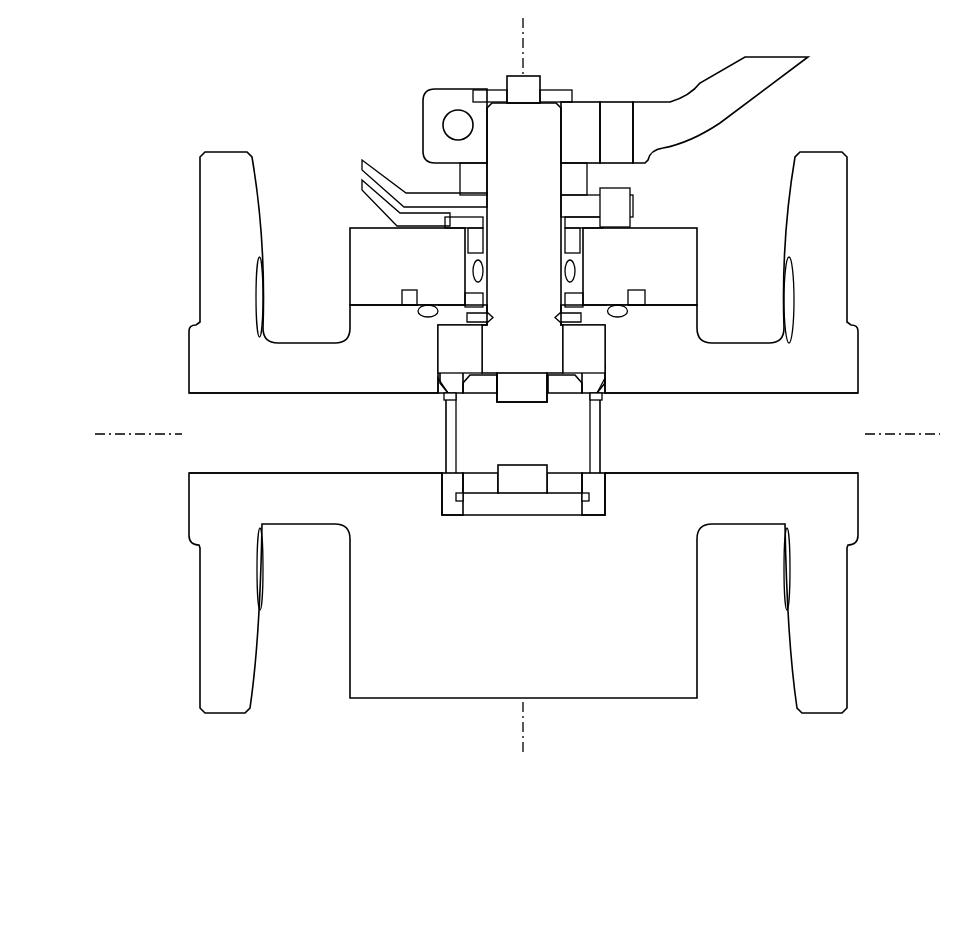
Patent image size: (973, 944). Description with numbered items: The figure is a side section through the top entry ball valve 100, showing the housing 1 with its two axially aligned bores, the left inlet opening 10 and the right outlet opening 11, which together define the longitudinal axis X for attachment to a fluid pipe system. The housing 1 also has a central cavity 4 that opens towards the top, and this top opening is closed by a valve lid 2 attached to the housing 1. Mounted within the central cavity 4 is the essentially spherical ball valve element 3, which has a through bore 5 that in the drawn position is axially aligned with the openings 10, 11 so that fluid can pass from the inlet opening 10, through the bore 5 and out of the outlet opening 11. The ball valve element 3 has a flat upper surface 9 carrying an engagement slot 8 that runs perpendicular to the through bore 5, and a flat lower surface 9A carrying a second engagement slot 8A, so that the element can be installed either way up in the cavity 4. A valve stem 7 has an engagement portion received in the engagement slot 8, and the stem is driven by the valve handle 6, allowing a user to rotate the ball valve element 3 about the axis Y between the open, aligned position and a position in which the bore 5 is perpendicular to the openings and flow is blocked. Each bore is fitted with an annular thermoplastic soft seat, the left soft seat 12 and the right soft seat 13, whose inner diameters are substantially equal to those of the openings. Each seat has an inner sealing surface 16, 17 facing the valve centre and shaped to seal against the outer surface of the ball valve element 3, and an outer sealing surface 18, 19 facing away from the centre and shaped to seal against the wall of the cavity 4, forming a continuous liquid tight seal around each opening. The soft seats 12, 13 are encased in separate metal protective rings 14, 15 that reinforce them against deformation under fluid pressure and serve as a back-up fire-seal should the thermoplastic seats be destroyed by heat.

The top entry ball valve 100 is at (889, 138).
The housing 1 is at (683, 320).
The valve lid 2 is at (373, 247).
The ball valve element 3 is at (565, 485).
The central cavity 4 is at (458, 340).
The through bore 5 is at (480, 452).
The valve handle 6 is at (700, 97).
The valve stem 7 is at (549, 137).
The engagement slot 8 is at (552, 387).
The second engagement slot 8A is at (498, 483).
The flat upper surface 9 is at (477, 375).
The flat lower surface 9A is at (485, 493).
The inlet opening 10 is at (199, 448).
The outlet opening 11 is at (849, 448).
The left soft seat 12 is at (452, 363).
The right soft seat 13 is at (597, 367).
The left protective ring 14 is at (452, 357).
The right protective ring 15 is at (598, 355).
The inner sealing surface 16 is at (440, 400).
The inner sealing surface 17 is at (605, 395).
The outer sealing surface 18 is at (438, 375).
The outer sealing surface 19 is at (607, 378).